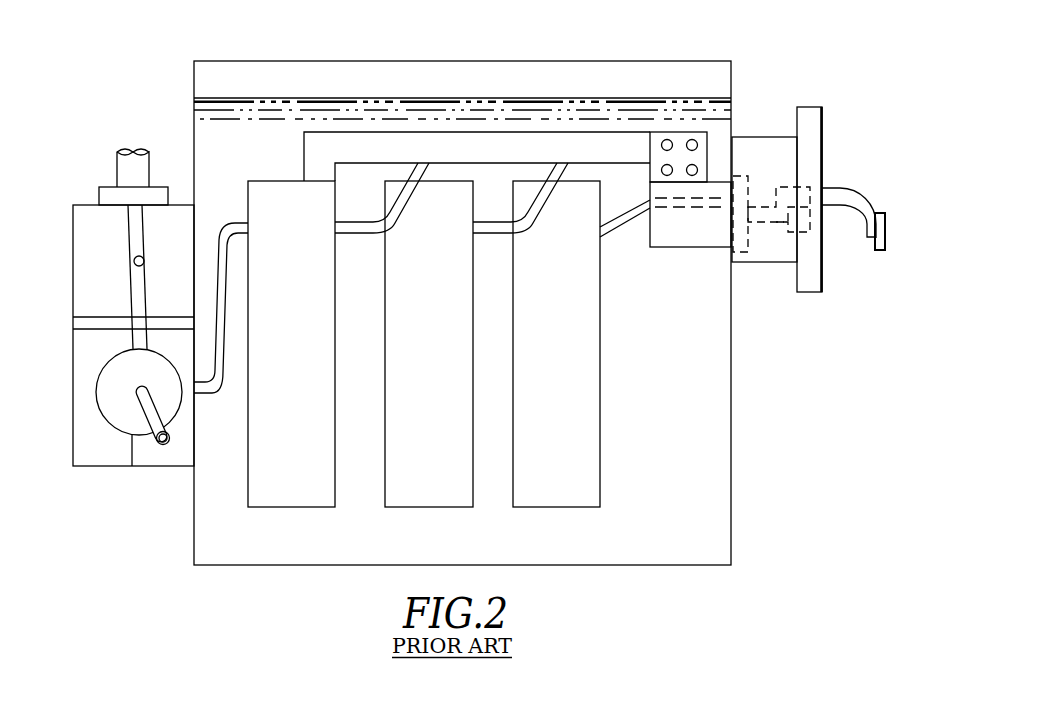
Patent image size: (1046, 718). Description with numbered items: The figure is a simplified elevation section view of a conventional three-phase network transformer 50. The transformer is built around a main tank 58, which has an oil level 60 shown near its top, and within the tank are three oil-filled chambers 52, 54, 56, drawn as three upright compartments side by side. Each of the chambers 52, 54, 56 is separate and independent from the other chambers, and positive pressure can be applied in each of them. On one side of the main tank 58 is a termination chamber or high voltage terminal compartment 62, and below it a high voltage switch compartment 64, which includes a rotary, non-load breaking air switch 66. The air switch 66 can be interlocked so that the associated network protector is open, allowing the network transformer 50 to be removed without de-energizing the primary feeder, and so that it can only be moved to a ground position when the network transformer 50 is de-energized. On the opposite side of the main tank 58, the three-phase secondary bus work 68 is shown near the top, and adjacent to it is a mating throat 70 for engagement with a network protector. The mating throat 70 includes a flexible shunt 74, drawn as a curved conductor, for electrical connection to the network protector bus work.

The three-phase network transformer 50 is at (473, 48).
The oil-filled chamber 52 is at (280, 508).
The oil-filled chamber 54 is at (418, 508).
The oil-filled chamber 56 is at (547, 508).
The main tank 58 is at (732, 470).
The oil level 60 is at (613, 98).
The high voltage terminal compartment 62 is at (100, 242).
The high voltage switch compartment 64 is at (103, 438).
The air switch 66 is at (132, 467).
The three-phase secondary bus work 68 is at (716, 148).
The mating throat 70 is at (821, 301).
The flexible shunt 74 is at (857, 205).